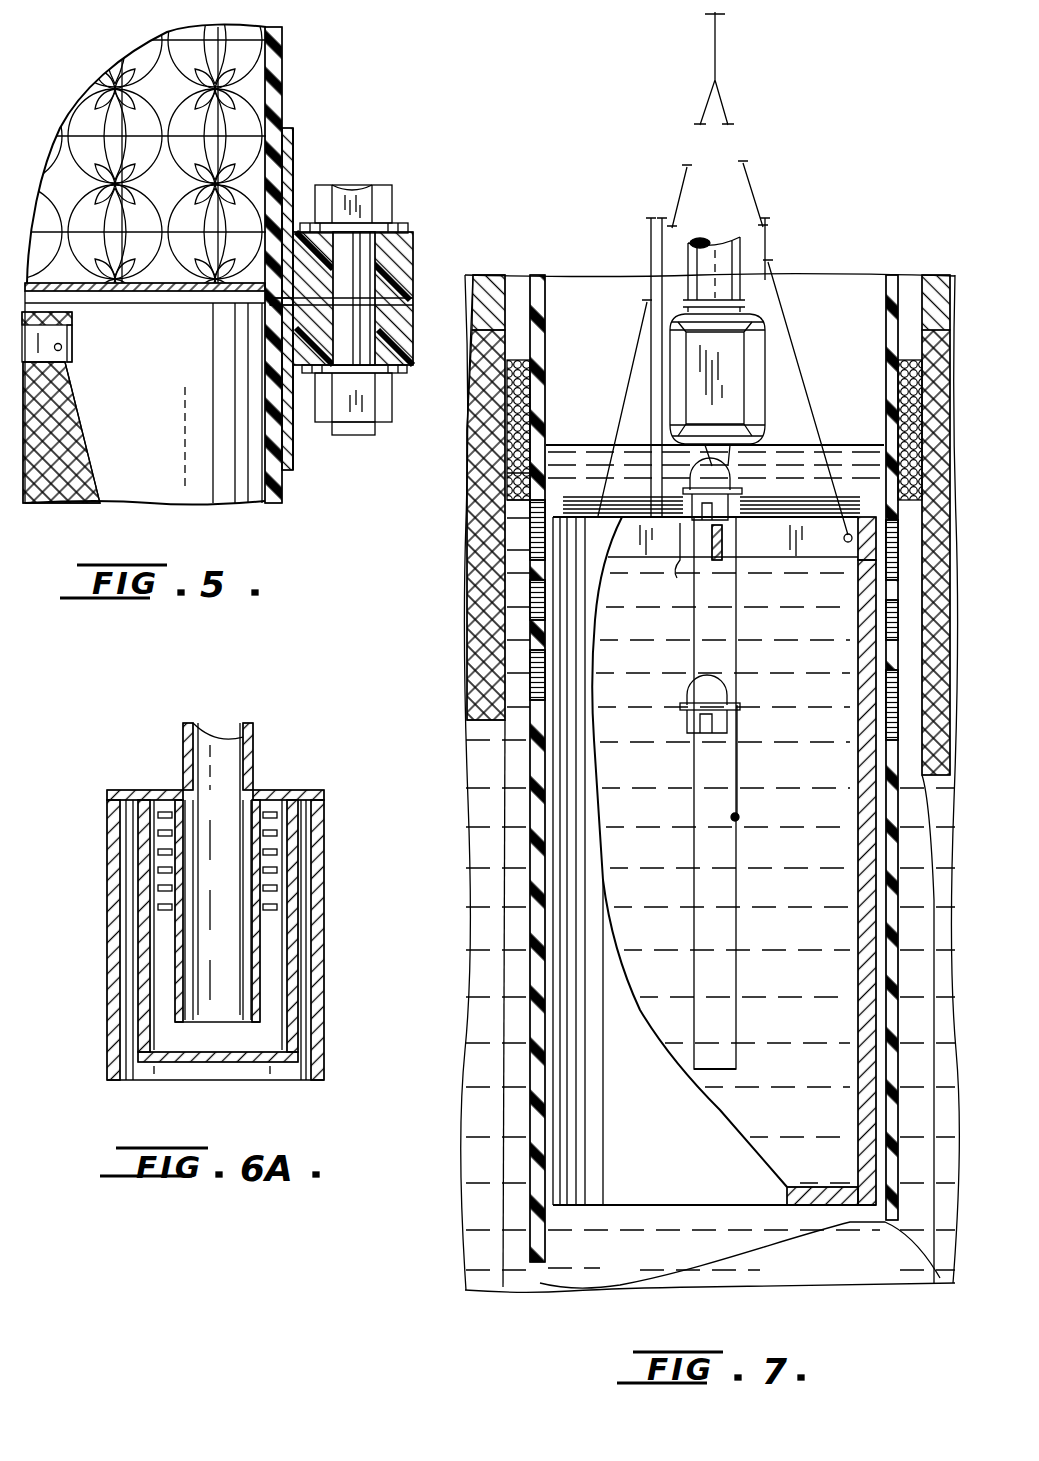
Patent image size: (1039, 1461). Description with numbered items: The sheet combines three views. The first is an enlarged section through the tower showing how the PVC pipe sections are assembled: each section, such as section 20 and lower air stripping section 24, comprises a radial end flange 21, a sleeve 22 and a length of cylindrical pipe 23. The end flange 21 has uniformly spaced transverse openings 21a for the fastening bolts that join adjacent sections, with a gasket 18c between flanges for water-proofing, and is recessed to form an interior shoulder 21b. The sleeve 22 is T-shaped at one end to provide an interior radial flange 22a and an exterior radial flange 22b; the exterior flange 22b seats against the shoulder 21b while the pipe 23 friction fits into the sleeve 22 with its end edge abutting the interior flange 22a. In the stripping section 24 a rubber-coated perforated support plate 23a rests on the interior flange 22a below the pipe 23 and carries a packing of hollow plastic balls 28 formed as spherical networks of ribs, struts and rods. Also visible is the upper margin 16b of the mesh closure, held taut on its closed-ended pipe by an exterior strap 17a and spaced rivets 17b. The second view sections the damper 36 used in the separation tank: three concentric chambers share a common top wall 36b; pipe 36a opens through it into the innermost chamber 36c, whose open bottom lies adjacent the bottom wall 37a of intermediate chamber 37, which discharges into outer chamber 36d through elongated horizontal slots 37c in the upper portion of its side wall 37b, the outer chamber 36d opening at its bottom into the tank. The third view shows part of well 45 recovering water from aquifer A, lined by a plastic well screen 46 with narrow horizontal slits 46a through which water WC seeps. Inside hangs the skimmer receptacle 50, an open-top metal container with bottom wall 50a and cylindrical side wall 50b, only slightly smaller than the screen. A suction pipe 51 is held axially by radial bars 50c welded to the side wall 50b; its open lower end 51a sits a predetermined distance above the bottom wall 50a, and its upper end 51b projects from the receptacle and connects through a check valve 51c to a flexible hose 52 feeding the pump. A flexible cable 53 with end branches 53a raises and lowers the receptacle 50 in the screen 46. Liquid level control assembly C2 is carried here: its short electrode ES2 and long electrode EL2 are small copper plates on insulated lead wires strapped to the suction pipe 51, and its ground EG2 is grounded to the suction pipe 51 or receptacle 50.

In FIG. 5, the packing balls 28 is at (276, 48).
In FIG. 5, the cylindrical pipe 23 is at (283, 92).
In FIG. 5, the lower air stripping section 24 is at (298, 149).
In FIG. 5, the sleeve 22 is at (294, 178).
In FIG. 5, the support plate 23a is at (130, 291).
In FIG. 5, the interior radial flange 22a is at (185, 293).
In FIG. 5, the exterior strap 17a is at (73, 350).
In FIG. 5, the spaced rivets 17b is at (73, 362).
In FIG. 5, the upper margin 16b is at (72, 390).
In FIG. 5, the interior shoulder 21b is at (281, 318).
In FIG. 5, the radial end flange 21 is at (414, 275).
In FIG. 5, the transverse openings 21a is at (378, 235).
In FIG. 5, the exterior radial flange 22b is at (317, 218).
In FIG. 5, the gasket 18c is at (408, 322).
In FIG. 5, the section 20 is at (297, 422).
In FIG. 6A, the damper 36 is at (331, 835).
In FIG. 6A, the pipe 36a is at (226, 744).
In FIG. 6A, the common top wall 36b is at (277, 789).
In FIG. 6A, the innermost chamber 36c is at (234, 861).
In FIG. 6A, the outer chamber 36d is at (132, 972).
In FIG. 6A, the intermediate chamber 37 is at (272, 996).
In FIG. 6A, the bottom wall 37a is at (222, 1062).
In FIG. 6A, the side wall 37b is at (290, 972).
In FIG. 6A, the openings 37c is at (138, 852).
In FIG. 7, the well 45 is at (507, 297).
In FIG. 7, the well screen 46 is at (527, 727).
In FIG. 7, the horizontal slits 46a is at (540, 597).
In FIG. 7, the skimmer receptacle 50 is at (582, 810).
In FIG. 7, the bottom wall 50a is at (600, 1207).
In FIG. 7, the cylindrical side wall 50b is at (866, 792).
In FIG. 7, the bars 50c is at (823, 550).
In FIG. 7, the suction pipe 51 is at (733, 900).
In FIG. 7, the open lower end 51a is at (723, 1060).
In FIG. 7, the upper end 51b is at (742, 490).
In FIG. 7, the check valve 51c is at (736, 400).
In FIG. 7, the flexible hose 52 is at (738, 267).
In FIG. 7, the flexible cable 53 is at (720, 50).
In FIG. 7, the end branches 53a is at (632, 360).
In FIG. 7, the aquifer A is at (460, 458).
In FIG. 7, the water WC is at (593, 410).
In FIG. 7, the short electrode ES2 is at (650, 562).
In FIG. 7, the long electrode EL2 is at (688, 690).
In FIG. 7, the ground EG2 is at (738, 758).
In FIG. 7, the liquid level control assembly C2 is at (740, 616).